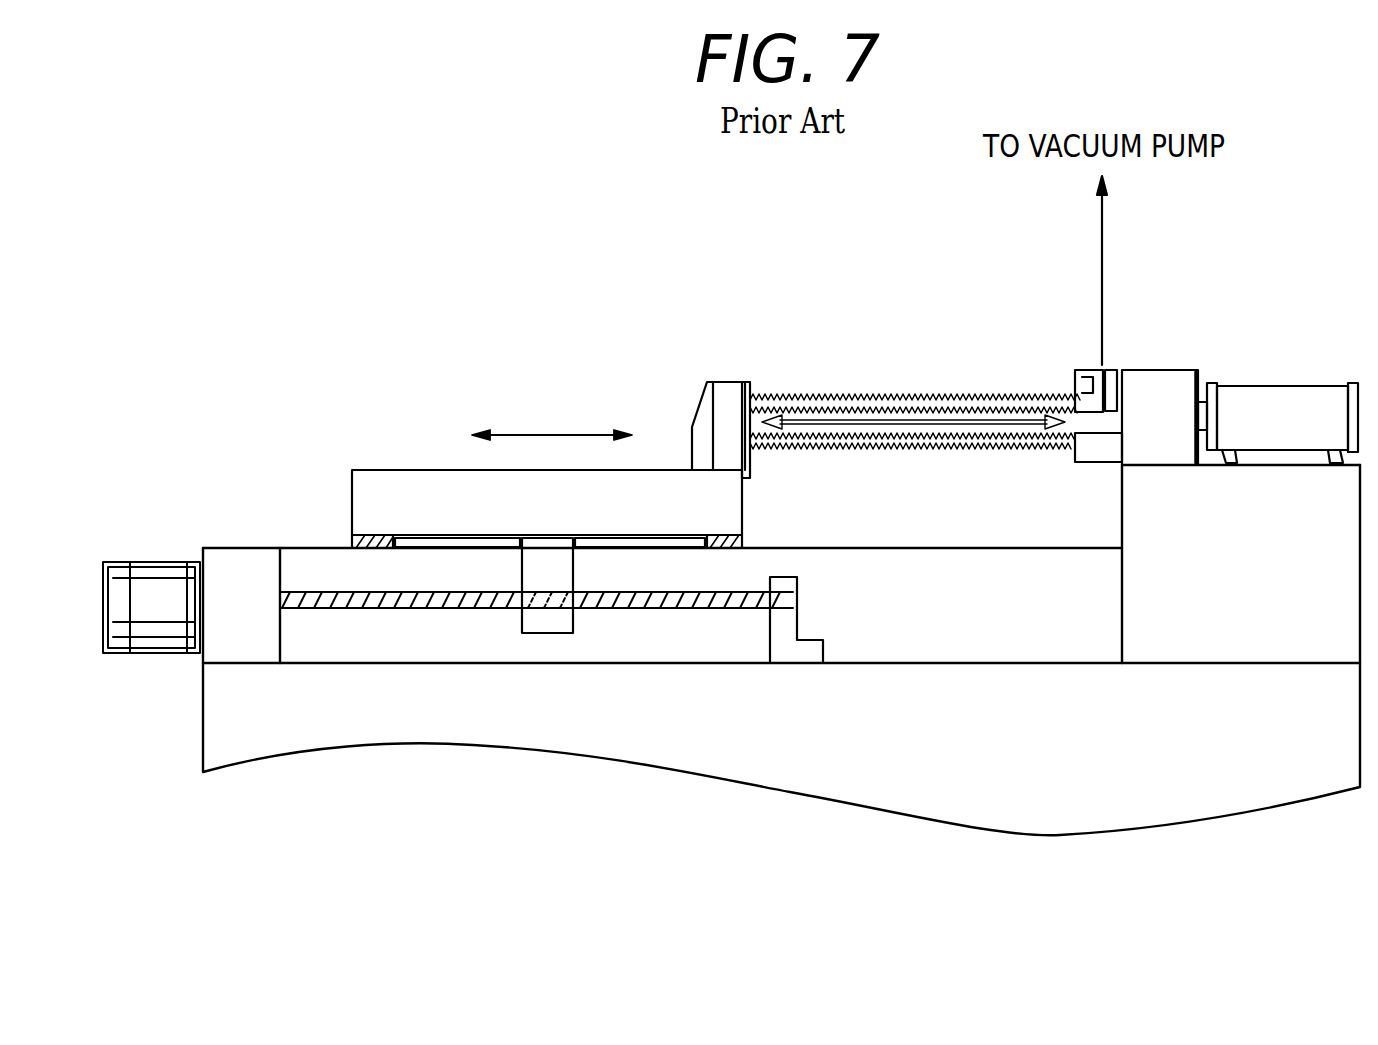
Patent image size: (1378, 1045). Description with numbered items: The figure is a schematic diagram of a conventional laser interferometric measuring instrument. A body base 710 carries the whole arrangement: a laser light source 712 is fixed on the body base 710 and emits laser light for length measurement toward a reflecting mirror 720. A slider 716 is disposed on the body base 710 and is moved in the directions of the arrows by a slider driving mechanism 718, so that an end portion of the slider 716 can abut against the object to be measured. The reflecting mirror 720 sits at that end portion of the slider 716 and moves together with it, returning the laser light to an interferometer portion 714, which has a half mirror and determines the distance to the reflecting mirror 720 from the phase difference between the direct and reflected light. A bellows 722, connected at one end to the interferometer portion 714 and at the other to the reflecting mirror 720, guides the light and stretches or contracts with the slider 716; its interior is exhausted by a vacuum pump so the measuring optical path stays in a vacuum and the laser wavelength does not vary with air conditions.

The body base 710 is at (1127, 795).
The laser light source 712 is at (1275, 410).
The interferometer portion 714 is at (1158, 388).
The slider 716 is at (395, 478).
The slider driving mechanism 718 is at (452, 610).
The reflecting mirror 720 is at (750, 393).
The bellows 722 is at (905, 440).